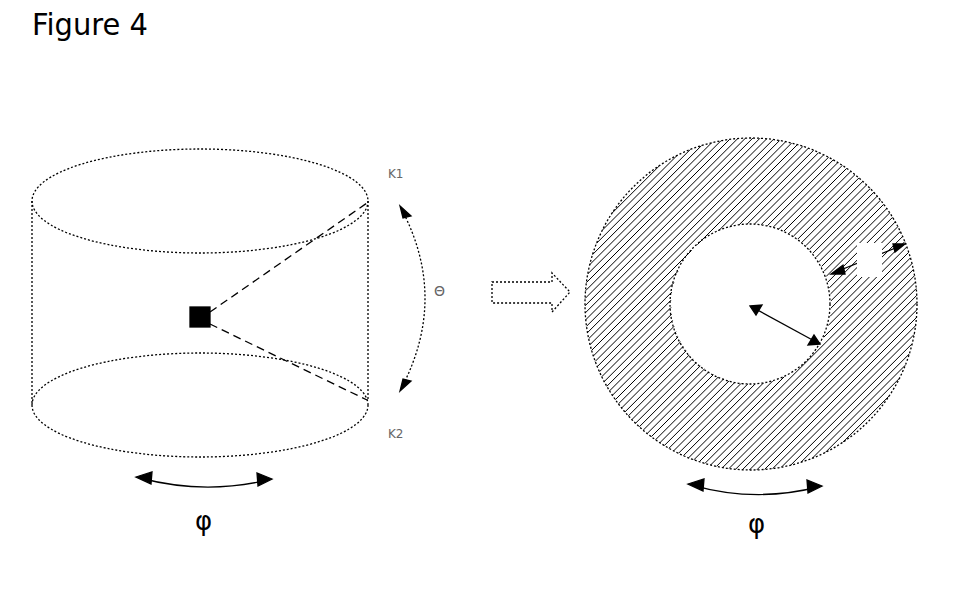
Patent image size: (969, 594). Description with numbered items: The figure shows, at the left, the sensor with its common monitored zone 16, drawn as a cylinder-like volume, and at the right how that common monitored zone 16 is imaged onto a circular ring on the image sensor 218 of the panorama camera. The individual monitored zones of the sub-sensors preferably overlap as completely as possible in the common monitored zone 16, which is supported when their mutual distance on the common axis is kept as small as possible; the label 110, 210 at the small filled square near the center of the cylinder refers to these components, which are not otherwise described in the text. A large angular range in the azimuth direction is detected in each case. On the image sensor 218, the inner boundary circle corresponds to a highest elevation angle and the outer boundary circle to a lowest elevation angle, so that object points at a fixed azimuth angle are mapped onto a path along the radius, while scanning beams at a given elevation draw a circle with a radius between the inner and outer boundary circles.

The common monitored zone 16 is at (267, 158).
The measurement point 110 is at (152, 363).
The measurement point 210 is at (190, 322).
The image sensor 218 is at (648, 125).